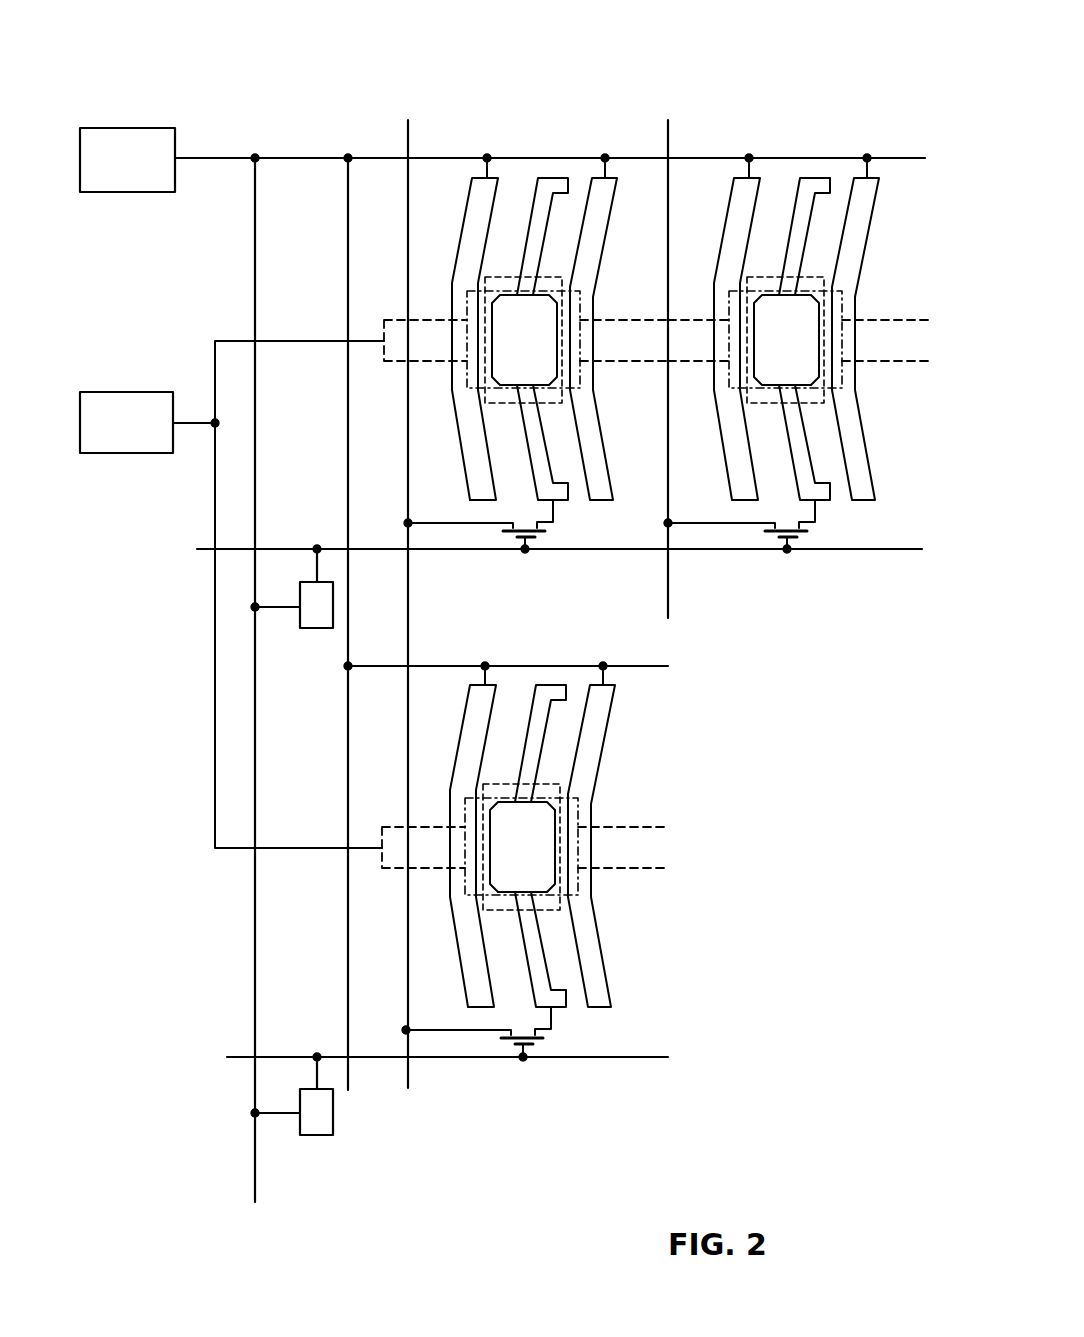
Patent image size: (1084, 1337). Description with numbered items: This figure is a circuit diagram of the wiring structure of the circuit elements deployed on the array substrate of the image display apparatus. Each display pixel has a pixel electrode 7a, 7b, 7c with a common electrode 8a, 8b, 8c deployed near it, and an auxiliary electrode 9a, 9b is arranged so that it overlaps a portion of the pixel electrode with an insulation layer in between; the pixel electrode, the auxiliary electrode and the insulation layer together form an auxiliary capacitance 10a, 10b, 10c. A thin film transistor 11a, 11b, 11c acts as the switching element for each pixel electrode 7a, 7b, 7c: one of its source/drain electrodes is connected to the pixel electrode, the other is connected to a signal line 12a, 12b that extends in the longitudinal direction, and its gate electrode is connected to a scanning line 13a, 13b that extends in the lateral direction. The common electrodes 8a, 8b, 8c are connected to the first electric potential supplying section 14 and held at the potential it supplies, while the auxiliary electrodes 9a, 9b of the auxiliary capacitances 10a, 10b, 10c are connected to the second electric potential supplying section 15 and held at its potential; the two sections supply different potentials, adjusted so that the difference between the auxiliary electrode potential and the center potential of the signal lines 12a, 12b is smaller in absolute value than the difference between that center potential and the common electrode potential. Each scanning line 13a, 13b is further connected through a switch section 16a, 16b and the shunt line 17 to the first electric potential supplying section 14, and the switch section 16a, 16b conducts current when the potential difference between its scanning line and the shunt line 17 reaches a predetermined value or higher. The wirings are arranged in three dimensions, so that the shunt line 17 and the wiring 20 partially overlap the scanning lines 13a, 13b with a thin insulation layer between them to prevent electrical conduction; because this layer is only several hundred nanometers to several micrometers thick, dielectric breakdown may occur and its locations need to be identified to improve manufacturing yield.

The pixel electrode 7a is at (553, 178).
The pixel electrode 7b is at (816, 178).
The pixel electrode 7c is at (549, 685).
The common electrode 8a is at (476, 177).
The common electrode 8b is at (739, 177).
The common electrode 8c is at (474, 685).
The auxiliary electrode 9a is at (643, 363).
The auxiliary electrode 9b is at (641, 870).
The auxiliary capacitance 10a is at (557, 402).
The auxiliary capacitance 10b is at (819, 402).
The auxiliary capacitance 10c is at (555, 909).
The thin film transistor 11a is at (543, 531).
The thin film transistor 11b is at (808, 538).
The thin film transistor 11c is at (540, 1038).
The signal line 12a is at (409, 137).
The signal line 12b is at (669, 147).
The scanning line 13a is at (228, 552).
The scanning line 13b is at (231, 1058).
The first electric potential supplying section 14 is at (135, 128).
The second electric potential supplying section 15 is at (135, 392).
The switch section 16a is at (310, 629).
The switch section 16b is at (315, 1136).
The shunt line 17 is at (255, 248).
The wiring 20 is at (348, 431).